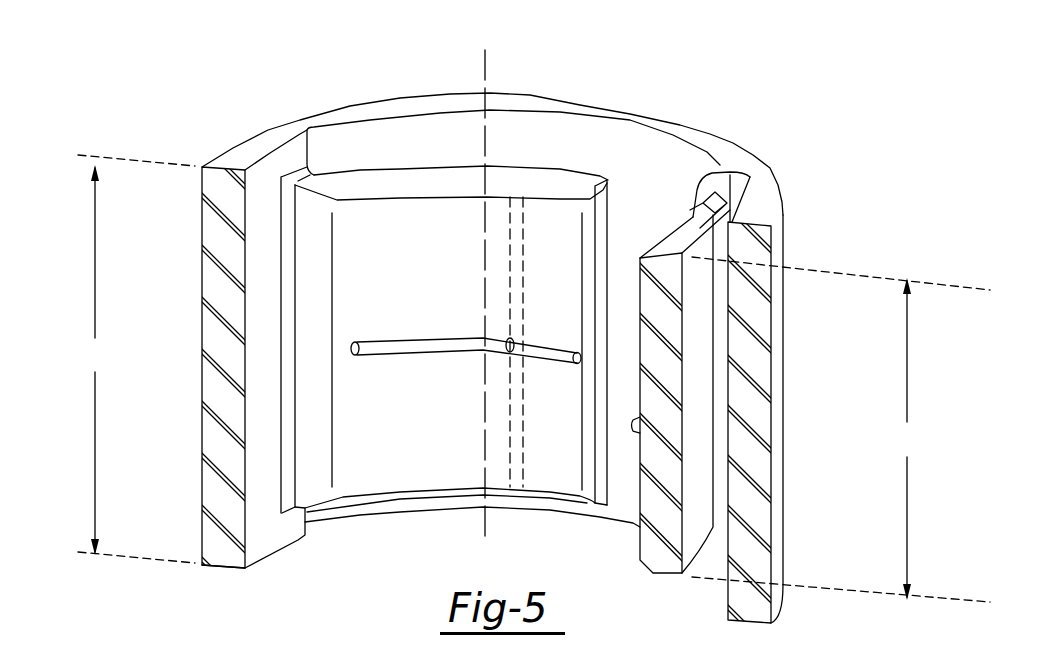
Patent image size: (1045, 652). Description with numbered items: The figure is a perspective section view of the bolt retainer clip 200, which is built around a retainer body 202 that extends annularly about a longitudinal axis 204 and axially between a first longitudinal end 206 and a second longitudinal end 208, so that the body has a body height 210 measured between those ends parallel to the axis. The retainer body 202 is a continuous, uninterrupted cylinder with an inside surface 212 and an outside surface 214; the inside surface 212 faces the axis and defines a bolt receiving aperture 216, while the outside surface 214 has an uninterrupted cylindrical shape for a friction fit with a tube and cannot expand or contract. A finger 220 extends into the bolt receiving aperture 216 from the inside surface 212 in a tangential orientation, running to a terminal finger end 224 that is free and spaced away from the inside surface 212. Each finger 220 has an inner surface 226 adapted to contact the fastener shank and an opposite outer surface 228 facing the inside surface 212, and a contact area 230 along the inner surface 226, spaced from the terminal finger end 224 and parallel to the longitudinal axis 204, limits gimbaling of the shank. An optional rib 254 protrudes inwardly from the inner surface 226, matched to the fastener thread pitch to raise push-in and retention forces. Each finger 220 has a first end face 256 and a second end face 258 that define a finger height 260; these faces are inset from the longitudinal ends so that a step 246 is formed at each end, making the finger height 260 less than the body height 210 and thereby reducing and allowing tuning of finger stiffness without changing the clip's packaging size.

The bolt retainer clip 200 is at (143, 85).
The retainer body 202 is at (747, 395).
The longitudinal axis 204 is at (487, 60).
The first longitudinal end 206 is at (238, 158).
The second longitudinal end 208 is at (223, 570).
The body height 210 is at (136, 359).
The inside surface 212 is at (670, 181).
The outside surface 214 is at (775, 238).
The bolt receiving aperture 216 is at (383, 550).
The finger 220 is at (523, 152).
The terminal finger end 224 is at (600, 212).
The inner surface 226 is at (360, 453).
The outer surface 228 is at (692, 493).
The contact area 230 is at (510, 250).
The step 246 is at (293, 155).
The rib 254 is at (438, 342).
The first end face 256 is at (418, 177).
The second end face 258 is at (445, 493).
The finger height 260 is at (841, 429).